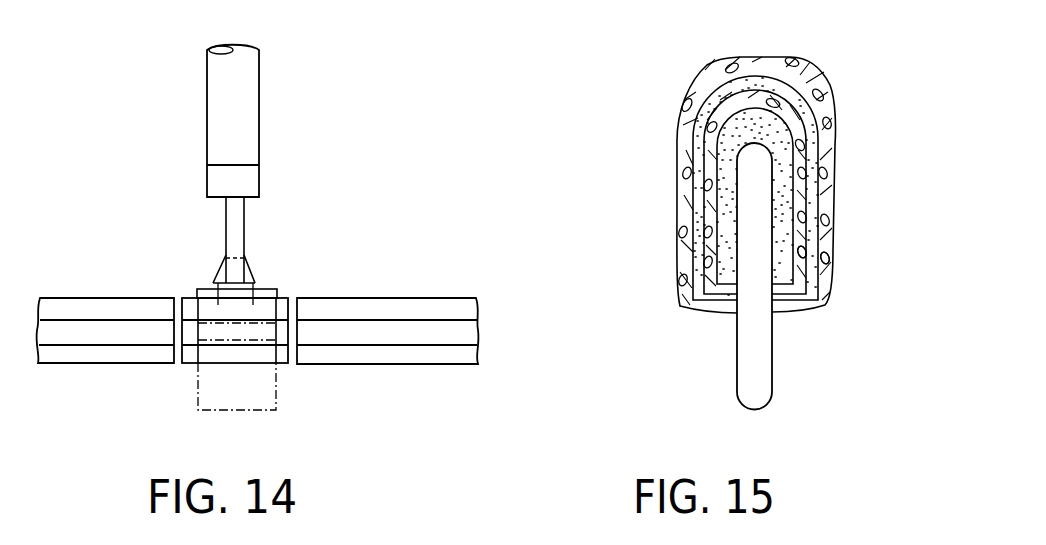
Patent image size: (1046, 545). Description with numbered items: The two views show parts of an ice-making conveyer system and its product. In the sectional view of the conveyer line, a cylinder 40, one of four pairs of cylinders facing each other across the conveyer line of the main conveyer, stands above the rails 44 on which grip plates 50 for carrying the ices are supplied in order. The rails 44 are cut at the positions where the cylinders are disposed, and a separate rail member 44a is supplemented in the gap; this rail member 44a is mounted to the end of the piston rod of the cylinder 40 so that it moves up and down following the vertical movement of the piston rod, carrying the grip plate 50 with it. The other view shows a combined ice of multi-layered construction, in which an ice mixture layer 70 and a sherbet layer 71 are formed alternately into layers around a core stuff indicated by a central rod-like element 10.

In FIG. 14, the cylinder 40 is at (247, 113).
In FIG. 14, the rail 44 is at (116, 300).
In FIG. 14, the rail member 44a is at (280, 357).
In FIG. 14, the grip plate 50 is at (198, 405).
In FIG. 15, the ice mixture layer 70 is at (806, 92).
In FIG. 15, the sherbet layer 71 is at (816, 186).
In FIG. 15, the core rod 10 is at (767, 388).